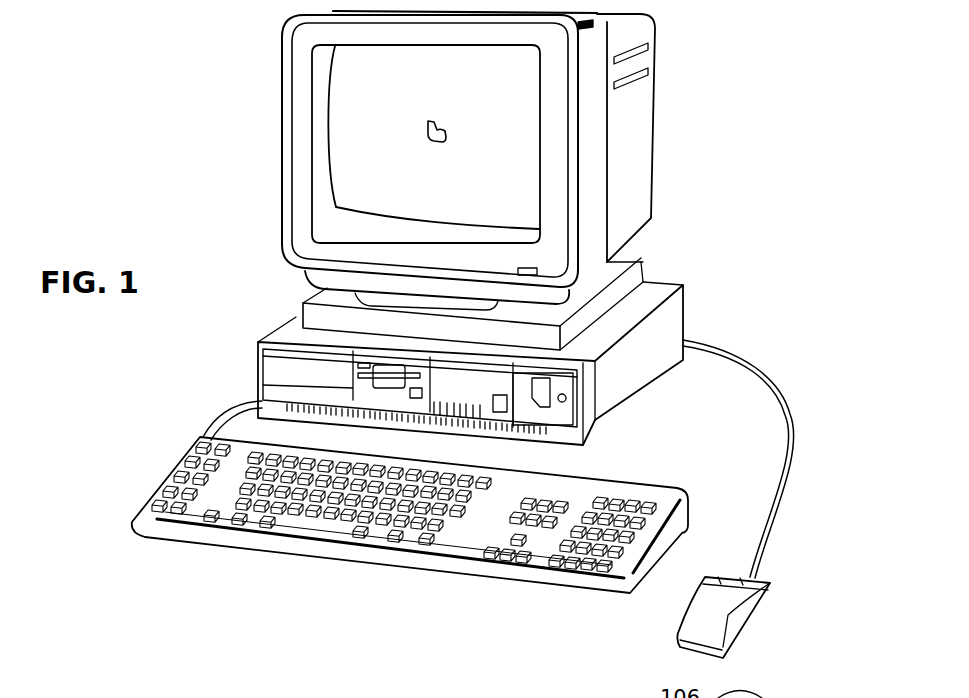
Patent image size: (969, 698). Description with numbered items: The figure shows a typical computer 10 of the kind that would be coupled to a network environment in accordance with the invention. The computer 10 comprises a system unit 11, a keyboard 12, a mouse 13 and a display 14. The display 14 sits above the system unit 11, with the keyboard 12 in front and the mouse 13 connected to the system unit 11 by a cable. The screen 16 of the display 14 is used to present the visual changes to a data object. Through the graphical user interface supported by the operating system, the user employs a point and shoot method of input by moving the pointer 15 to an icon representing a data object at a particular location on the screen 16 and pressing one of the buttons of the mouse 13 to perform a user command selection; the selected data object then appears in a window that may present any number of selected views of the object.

The computer 10 is at (228, 217).
The system unit 11 is at (258, 357).
The keyboard 12 is at (160, 540).
The mouse 13 is at (762, 610).
The display 14 is at (282, 134).
The pointer 15 is at (432, 118).
The screen 16 is at (397, 171).